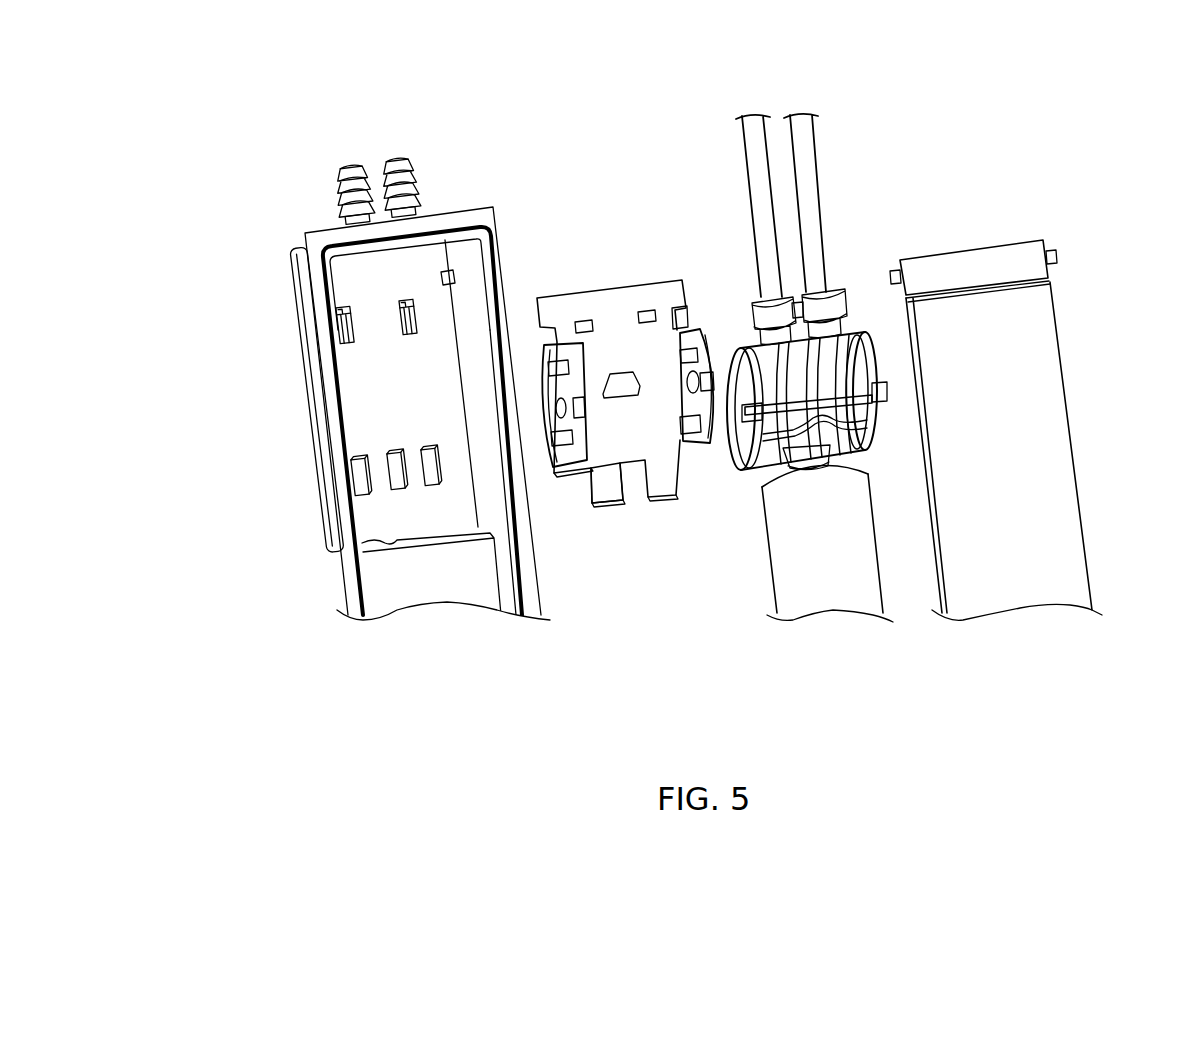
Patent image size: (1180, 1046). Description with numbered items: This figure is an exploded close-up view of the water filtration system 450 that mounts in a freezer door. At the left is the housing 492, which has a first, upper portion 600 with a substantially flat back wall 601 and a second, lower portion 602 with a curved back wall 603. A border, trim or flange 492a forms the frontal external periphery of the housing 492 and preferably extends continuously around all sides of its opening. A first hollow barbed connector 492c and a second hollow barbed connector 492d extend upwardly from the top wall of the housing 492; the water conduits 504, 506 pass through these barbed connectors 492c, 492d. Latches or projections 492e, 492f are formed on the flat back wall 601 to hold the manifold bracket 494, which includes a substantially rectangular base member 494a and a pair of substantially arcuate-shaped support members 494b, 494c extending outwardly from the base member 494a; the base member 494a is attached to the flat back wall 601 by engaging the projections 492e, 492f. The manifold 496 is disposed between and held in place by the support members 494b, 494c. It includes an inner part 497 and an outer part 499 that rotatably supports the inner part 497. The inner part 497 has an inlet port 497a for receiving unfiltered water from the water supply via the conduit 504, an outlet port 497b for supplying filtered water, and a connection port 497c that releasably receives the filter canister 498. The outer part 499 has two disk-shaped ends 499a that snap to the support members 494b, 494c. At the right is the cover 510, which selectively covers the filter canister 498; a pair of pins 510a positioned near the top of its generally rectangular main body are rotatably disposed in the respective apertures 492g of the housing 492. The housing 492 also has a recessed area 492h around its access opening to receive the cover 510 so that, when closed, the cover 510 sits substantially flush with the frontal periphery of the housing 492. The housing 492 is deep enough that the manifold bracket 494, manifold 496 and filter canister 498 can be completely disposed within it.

The water filtration system 450 is at (847, 362).
The housing 492 is at (391, 406).
The border, trim or flange 492a is at (318, 237).
The first hollow barbed connector 492c is at (348, 196).
The second hollow barbed connector 492d is at (412, 188).
The latches or projections 492e is at (403, 327).
The latches or projections 492f is at (430, 455).
The apertures 492g is at (483, 216).
The recessed area 492h is at (521, 604).
The manifold bracket 494 is at (632, 405).
The base member 494a is at (614, 455).
The support member 494b is at (577, 405).
The support member 494c is at (705, 445).
The manifold 496 is at (875, 368).
The inner part 497 is at (851, 399).
The inlet port 497a is at (758, 305).
The outlet port 497b is at (843, 300).
The connection port 497c is at (857, 432).
The filter canister 498 is at (840, 562).
The outer part 499 is at (745, 463).
The disk-shaped ends 499a is at (745, 345).
The water conduit 504 is at (748, 182).
The water conduit 506 is at (822, 190).
The cover 510 is at (1026, 414).
The pins 510a is at (1052, 250).
The first, upper portion 600 is at (360, 406).
The flat back wall 601 is at (352, 265).
The second, lower portion 602 is at (370, 648).
The curved back wall 603 is at (433, 600).